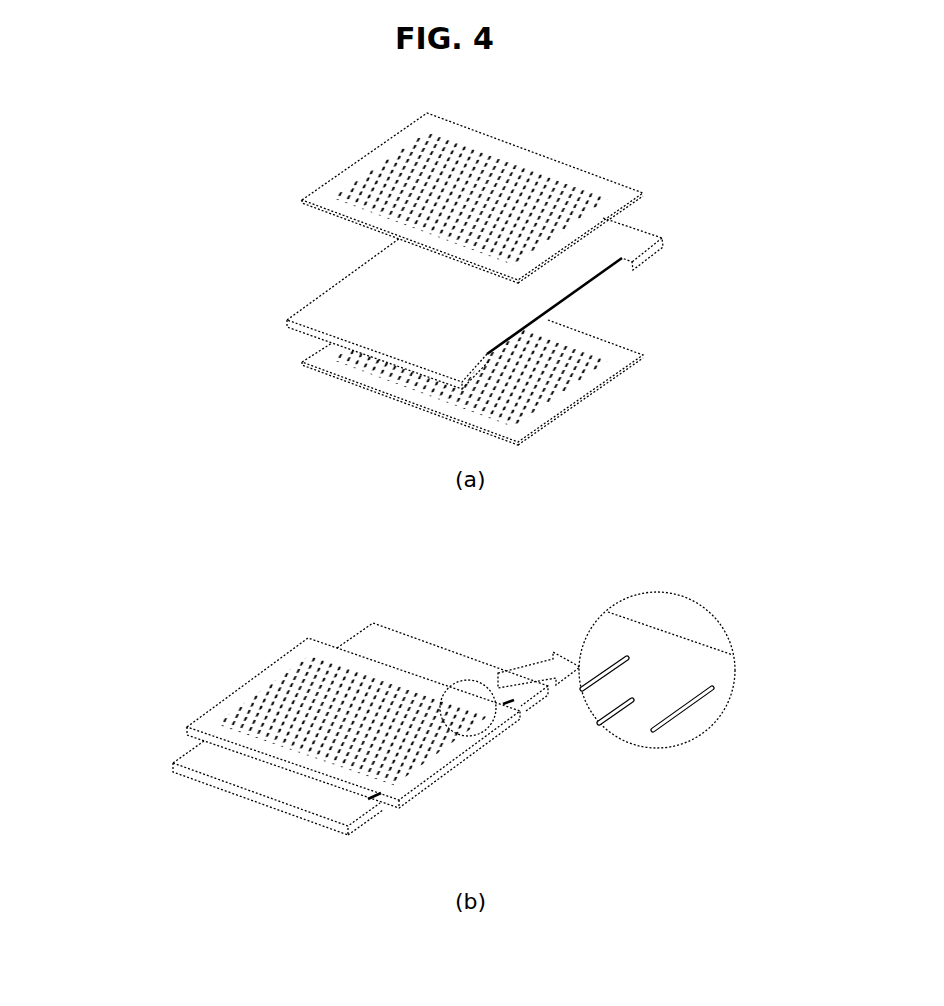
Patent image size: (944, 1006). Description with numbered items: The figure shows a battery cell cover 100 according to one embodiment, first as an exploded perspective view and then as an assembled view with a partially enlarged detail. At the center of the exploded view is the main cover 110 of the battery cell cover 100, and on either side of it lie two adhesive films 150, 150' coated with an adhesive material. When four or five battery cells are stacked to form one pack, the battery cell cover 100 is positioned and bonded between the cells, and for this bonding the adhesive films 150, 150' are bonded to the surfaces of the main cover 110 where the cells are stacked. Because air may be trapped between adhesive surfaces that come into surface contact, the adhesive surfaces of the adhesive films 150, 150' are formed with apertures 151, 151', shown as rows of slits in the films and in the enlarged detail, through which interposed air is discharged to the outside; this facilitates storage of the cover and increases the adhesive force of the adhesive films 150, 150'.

The adhesive film 150 is at (479, 460).
The apertures 151 is at (448, 449).
The main cover 110 is at (342, 302).
The adhesive film 150' is at (472, 565).
The apertures 151' is at (502, 365).
The battery cell cover 100 is at (415, 650).